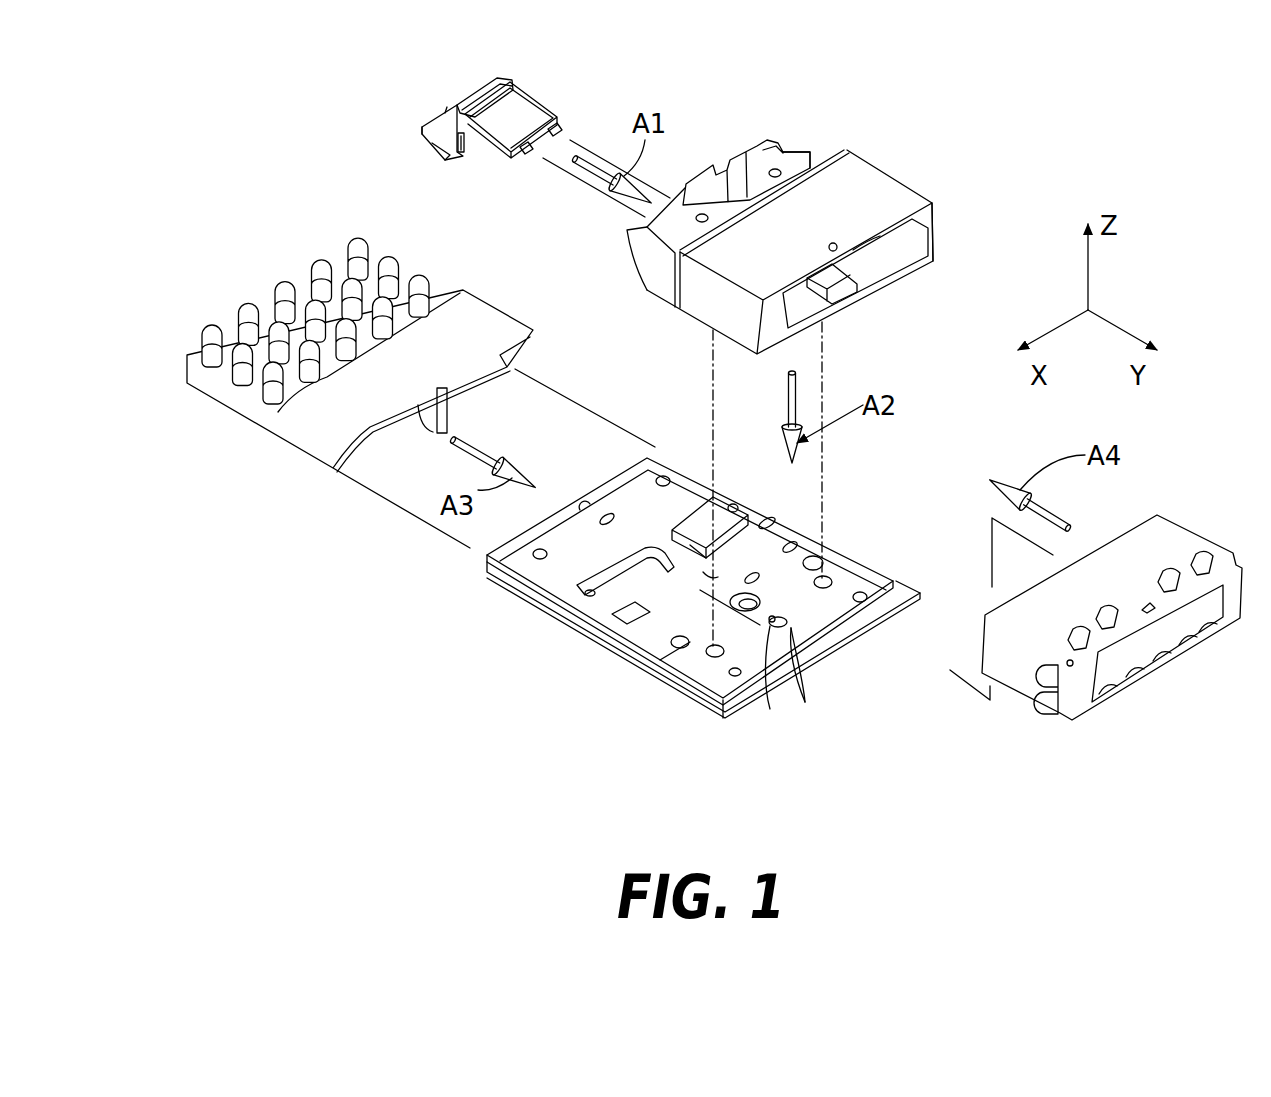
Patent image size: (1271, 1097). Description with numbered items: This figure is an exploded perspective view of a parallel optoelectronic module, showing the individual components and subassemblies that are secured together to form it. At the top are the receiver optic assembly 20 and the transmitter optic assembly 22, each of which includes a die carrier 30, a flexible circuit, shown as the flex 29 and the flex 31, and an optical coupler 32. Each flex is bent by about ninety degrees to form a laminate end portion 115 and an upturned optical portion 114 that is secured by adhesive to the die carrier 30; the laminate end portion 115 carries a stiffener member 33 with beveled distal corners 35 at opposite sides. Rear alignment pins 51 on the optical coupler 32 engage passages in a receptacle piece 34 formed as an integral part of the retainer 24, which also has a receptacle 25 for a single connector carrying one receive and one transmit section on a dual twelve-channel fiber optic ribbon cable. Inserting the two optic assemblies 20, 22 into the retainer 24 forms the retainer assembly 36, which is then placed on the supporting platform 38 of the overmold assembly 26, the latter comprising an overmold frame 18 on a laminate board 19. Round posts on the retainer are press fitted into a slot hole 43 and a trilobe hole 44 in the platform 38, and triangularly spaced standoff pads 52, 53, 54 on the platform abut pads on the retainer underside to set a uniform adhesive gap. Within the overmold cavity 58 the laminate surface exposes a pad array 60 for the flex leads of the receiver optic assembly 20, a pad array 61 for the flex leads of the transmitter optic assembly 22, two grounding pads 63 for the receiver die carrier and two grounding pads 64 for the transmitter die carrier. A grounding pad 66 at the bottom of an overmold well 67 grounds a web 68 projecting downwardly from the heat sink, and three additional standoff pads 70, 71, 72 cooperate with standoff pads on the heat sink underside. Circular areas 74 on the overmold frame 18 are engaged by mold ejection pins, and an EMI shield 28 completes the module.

The overmold frame 18 is at (720, 722).
The laminate board 19 is at (522, 598).
The receiver optic assembly 20 is at (450, 93).
The transmitter optic assembly 22 is at (728, 148).
The retainer 24 is at (925, 228).
The receptacle 25 is at (883, 257).
The overmold assembly 26 is at (575, 645).
The EMI shield 28 is at (1033, 712).
The flex 29 is at (295, 452).
The die carrier 30 is at (513, 80).
The flex 31 is at (433, 110).
The optical coupler 32 is at (527, 110).
The stiffener member 33 is at (432, 143).
The receptacle piece 34 is at (798, 153).
The beveled distal corners 35 is at (420, 132).
The retainer assembly 36 is at (912, 188).
The supporting platform 38 is at (836, 624).
The slot hole 43 is at (716, 712).
The trilobe hole 44 is at (832, 582).
The rear alignment pins 51 is at (562, 128).
The standoff pad 52 is at (823, 559).
The standoff pad 53 is at (805, 690).
The standoff pad 54 is at (668, 653).
The overmold cavity 58 is at (710, 575).
The pad array 60 is at (645, 590).
The pad array 61 is at (747, 517).
The grounding pads 63 is at (672, 648).
The grounding pads 64 is at (798, 544).
The grounding pad 66 is at (760, 609).
The overmold well 67 is at (768, 692).
The web 68 is at (450, 412).
The standoff pad 70 is at (617, 517).
The standoff pad 71 is at (628, 612).
The standoff pad 72 is at (800, 512).
The circular areas 74 is at (665, 474).
The upturned optical portion 114 is at (462, 153).
The laminate end portion 115 is at (447, 108).